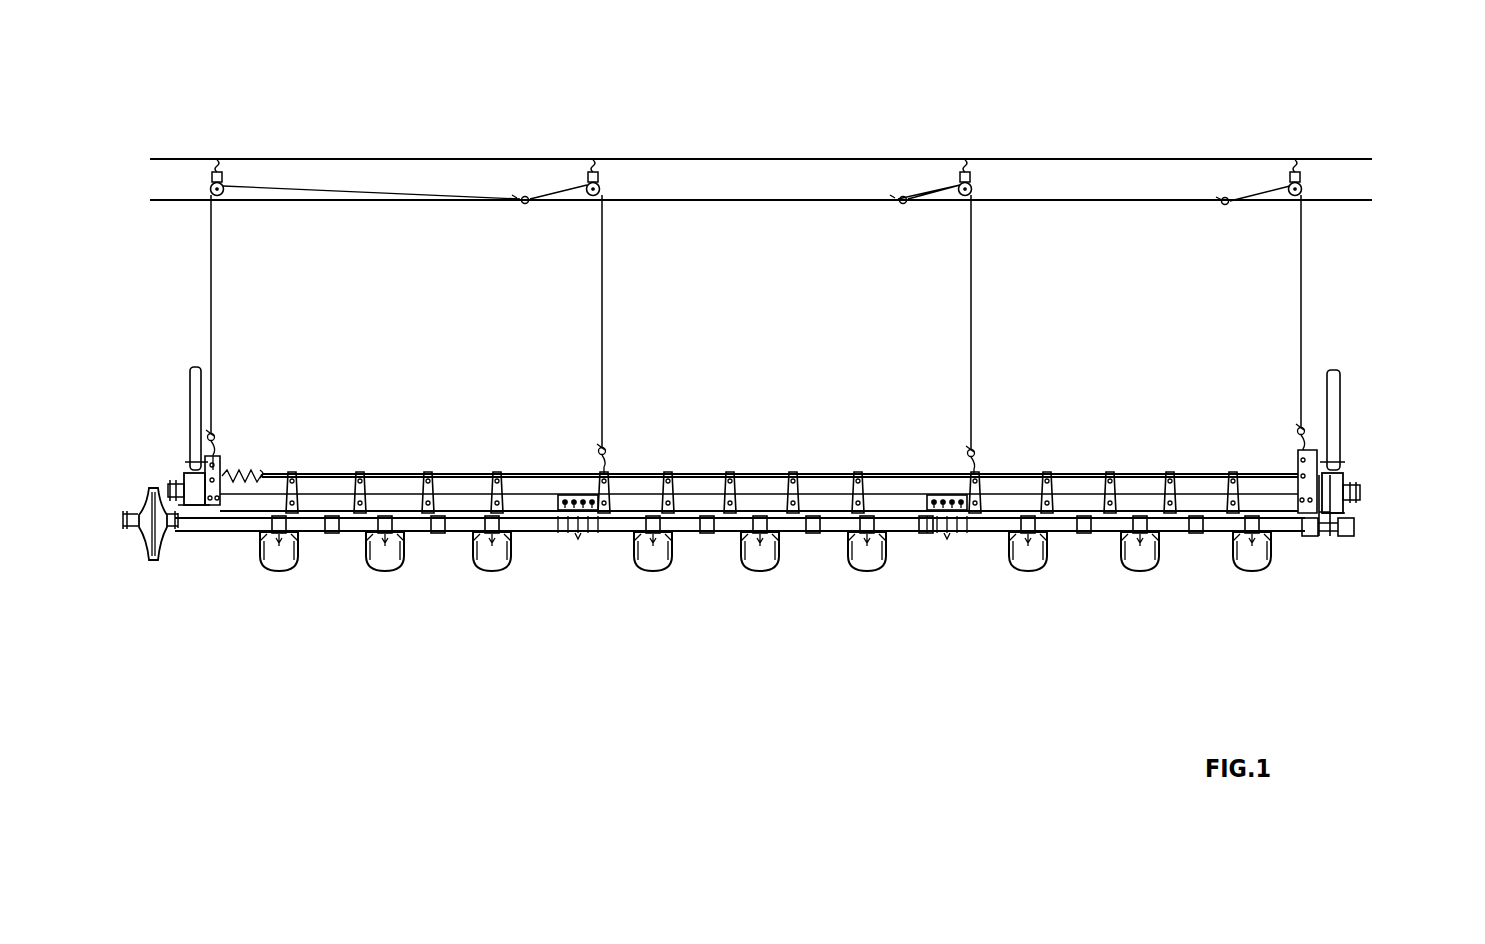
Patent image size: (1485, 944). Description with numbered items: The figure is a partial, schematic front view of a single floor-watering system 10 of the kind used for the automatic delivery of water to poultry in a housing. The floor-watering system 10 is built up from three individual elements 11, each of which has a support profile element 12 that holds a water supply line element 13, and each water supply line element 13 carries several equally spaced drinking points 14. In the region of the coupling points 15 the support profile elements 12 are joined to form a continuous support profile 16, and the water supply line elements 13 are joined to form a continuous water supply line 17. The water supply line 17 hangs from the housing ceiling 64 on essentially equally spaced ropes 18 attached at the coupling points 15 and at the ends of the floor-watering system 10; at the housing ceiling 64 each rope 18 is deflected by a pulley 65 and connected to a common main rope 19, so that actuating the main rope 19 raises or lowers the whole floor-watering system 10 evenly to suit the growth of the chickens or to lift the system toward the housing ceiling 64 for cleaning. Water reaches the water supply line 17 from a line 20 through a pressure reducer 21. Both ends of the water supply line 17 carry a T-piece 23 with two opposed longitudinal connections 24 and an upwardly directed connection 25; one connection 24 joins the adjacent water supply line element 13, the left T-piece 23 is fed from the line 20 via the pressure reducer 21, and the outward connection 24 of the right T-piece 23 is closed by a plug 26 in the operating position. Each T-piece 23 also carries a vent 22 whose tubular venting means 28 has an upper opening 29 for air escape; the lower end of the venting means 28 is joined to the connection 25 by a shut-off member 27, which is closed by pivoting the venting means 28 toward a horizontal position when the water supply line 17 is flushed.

The floor-watering system 10 is at (740, 544).
The individual element 11 is at (470, 447).
The support profile element 12 is at (320, 485).
The water supply line element 13 is at (455, 515).
The drinking point 14 is at (253, 548).
The coupling point 15 is at (575, 530).
The support profile 16 is at (760, 490).
The water supply line 17 is at (820, 528).
The rope 18 is at (1305, 302).
The main rope 19 is at (690, 200).
The line 20 is at (125, 520).
The pressure reducer 21 is at (148, 533).
The vent 22 is at (755, 426).
The T-piece 23 is at (1357, 545).
The connection 24 is at (1350, 536).
The connection 25 is at (1345, 515).
The plug 26 is at (1356, 525).
The shut-off member 27 is at (165, 465).
The venting means 28 is at (761, 493).
The opening 29 is at (1337, 375).
The housing ceiling 64 is at (1075, 160).
The pulley 65 is at (1302, 178).